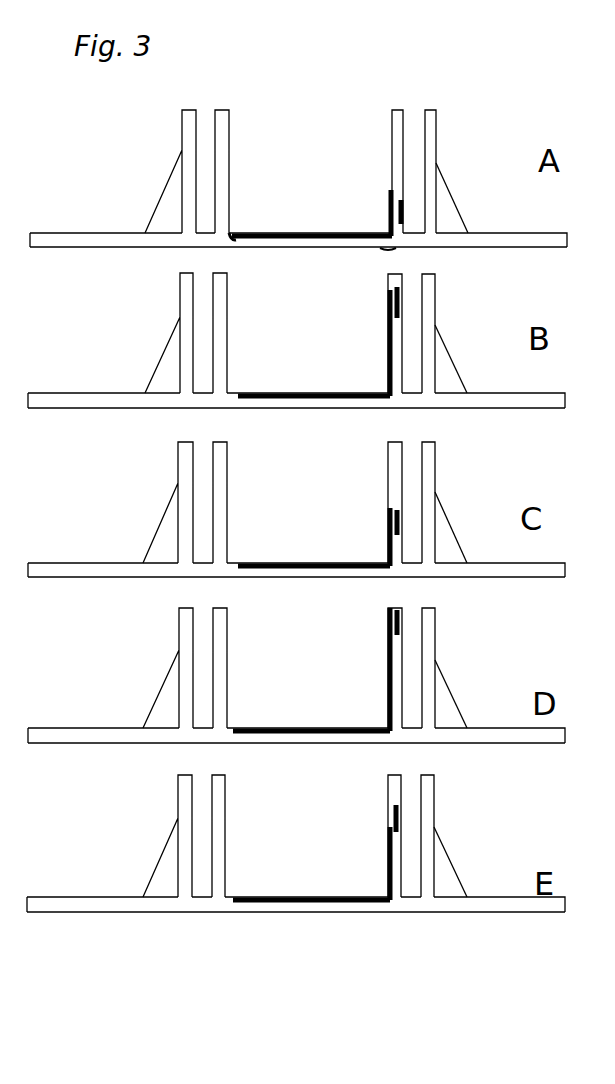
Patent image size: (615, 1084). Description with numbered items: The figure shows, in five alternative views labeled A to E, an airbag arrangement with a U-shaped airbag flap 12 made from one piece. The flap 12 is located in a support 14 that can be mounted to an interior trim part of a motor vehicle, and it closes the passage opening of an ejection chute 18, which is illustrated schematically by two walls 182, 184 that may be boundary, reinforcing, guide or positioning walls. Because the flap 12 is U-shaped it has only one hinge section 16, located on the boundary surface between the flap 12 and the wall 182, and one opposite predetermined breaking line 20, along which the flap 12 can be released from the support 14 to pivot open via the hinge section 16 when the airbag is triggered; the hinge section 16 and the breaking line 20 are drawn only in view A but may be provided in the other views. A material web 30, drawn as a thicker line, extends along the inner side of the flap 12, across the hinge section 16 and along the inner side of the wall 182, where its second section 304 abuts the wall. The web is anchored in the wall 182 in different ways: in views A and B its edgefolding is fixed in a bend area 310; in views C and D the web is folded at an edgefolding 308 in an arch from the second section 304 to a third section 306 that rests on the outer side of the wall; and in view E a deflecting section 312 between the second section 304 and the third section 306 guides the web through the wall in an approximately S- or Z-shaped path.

The flap 12 is at (297, 247).
The support 14 is at (530, 243).
The hinge section 16 is at (388, 248).
The ejection chute 18 is at (306, 136).
The predetermined breaking line 20 is at (234, 243).
The material web 30 is at (268, 233).
The wall 182 is at (400, 128).
The wall 184 is at (225, 128).
The second section 304 is at (392, 205).
The third section 306 is at (400, 212).
The edgefolding 308 is at (388, 505).
The bend area 310 is at (395, 190).
The deflecting section 312 is at (390, 825).